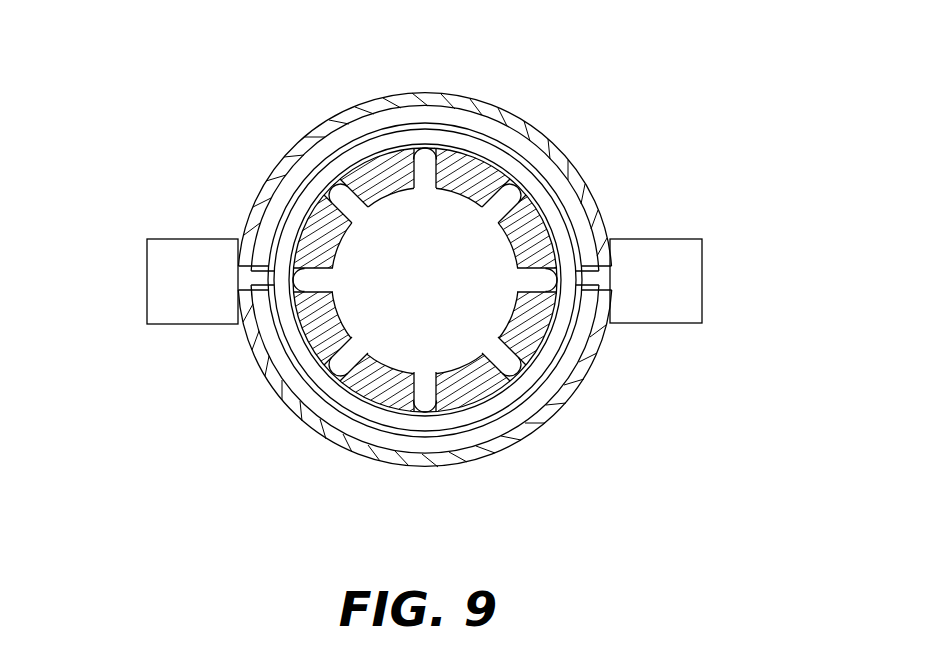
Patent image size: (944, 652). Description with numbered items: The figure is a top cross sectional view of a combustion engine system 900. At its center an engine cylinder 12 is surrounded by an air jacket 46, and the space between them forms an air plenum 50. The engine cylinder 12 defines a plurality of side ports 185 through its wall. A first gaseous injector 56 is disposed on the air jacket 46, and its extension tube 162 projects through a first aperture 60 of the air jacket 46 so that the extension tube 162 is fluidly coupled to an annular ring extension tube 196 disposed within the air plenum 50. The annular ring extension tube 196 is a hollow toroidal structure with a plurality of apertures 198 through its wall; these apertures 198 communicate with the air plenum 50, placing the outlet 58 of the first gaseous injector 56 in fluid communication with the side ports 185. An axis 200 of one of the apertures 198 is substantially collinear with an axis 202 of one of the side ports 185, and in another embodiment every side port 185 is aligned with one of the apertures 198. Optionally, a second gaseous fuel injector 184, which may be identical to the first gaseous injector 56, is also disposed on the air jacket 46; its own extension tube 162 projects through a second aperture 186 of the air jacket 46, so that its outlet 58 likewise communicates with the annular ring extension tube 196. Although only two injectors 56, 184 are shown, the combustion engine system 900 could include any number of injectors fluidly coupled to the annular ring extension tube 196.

The combustion engine system 900 is at (745, 107).
The side ports 185 is at (348, 180).
The apertures 198 is at (322, 200).
The axis 202 is at (487, 213).
The annular ring extension tube 196 is at (512, 127).
The axis 200 is at (540, 203).
The extension tube 162 is at (588, 228).
The first aperture 60 is at (595, 245).
The engine cylinder 12 is at (297, 367).
The air jacket 46 is at (305, 418).
The air plenum 50 is at (585, 360).
The outlet 58 is at (257, 323).
The second aperture 186 is at (242, 236).
The second gaseous fuel injector 184 is at (147, 277).
The first gaseous injector 56 is at (702, 263).